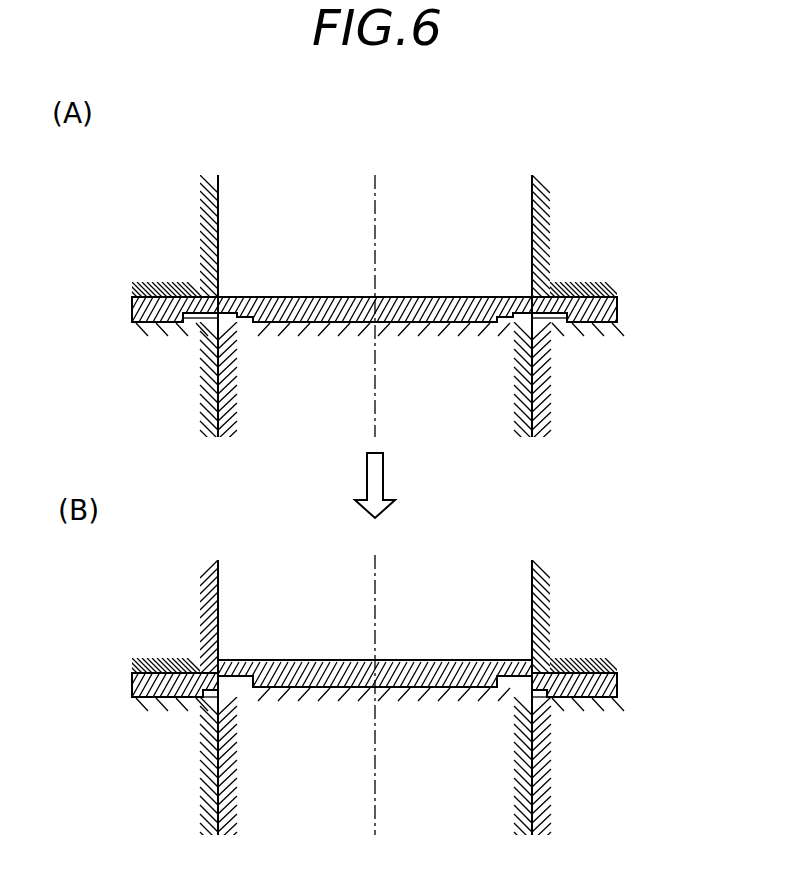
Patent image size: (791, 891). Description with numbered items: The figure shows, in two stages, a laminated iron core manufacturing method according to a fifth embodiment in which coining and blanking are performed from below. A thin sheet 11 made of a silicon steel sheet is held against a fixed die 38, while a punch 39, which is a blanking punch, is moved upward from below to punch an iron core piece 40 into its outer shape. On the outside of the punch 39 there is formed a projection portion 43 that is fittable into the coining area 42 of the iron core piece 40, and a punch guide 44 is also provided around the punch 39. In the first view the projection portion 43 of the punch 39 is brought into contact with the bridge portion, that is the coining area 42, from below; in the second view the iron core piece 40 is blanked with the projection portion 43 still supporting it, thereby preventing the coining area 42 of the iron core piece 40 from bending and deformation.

The thin sheet 11 is at (597, 296).
The die 38 is at (188, 213).
The punch 39 is at (262, 415).
The iron core piece 40 is at (433, 303).
The coining area 42 is at (203, 318).
The projection portion 43 is at (237, 313).
The punch guide 44 is at (567, 400).